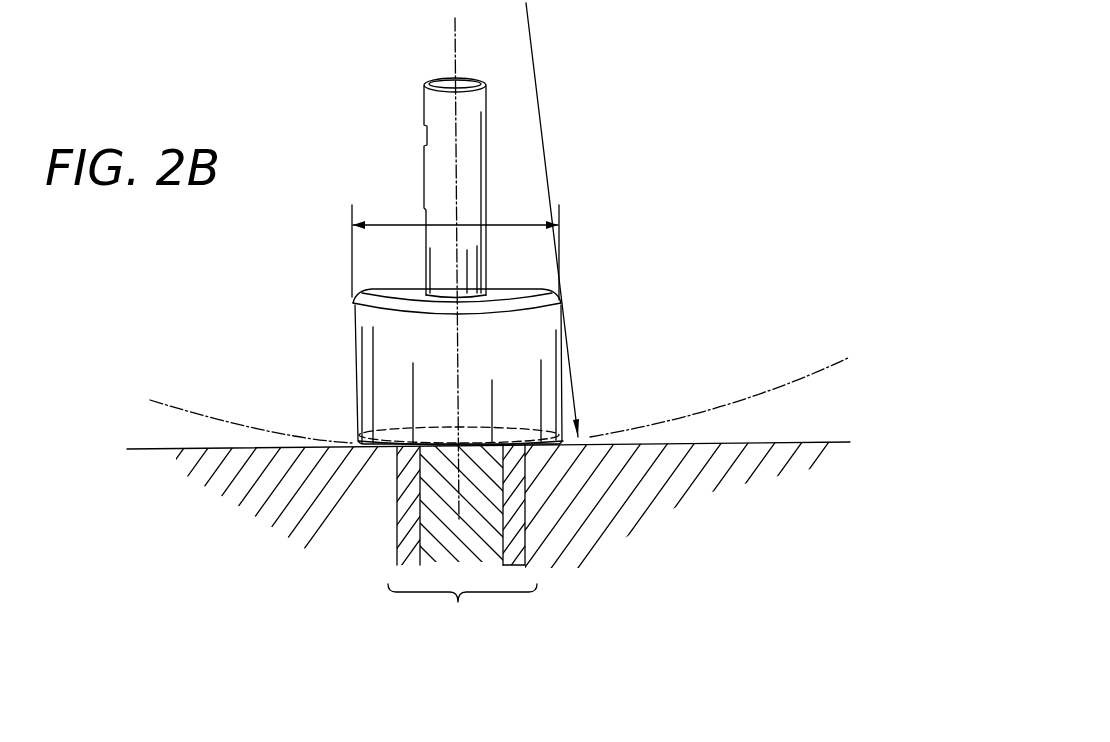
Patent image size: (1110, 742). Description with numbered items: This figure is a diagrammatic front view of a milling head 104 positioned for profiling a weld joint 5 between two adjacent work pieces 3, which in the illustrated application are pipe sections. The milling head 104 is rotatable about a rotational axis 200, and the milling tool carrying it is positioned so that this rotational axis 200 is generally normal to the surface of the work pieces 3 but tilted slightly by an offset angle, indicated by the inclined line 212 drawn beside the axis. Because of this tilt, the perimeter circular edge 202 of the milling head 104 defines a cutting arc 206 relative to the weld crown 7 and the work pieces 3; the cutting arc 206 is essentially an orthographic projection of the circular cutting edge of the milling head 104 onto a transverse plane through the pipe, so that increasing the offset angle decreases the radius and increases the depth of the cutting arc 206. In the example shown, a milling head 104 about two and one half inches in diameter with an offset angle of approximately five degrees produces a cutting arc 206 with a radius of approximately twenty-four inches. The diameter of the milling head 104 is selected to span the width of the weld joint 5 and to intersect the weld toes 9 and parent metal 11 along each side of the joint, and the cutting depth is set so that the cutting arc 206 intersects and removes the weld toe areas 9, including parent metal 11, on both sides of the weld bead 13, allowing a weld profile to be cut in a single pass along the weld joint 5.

The rotational axis 200 is at (455, 62).
The feed direction line 212 is at (548, 180).
The milling head 104 is at (353, 362).
The perimeter circular edge 202 is at (523, 427).
The weld crown 7 is at (450, 443).
The cutting arc 206 is at (594, 434).
The work pieces 3 is at (345, 484).
The weld bead 13 is at (443, 528).
The weld toes 9 is at (503, 472).
The parent metal 11 is at (527, 538).
The weld joint 5 is at (462, 609).